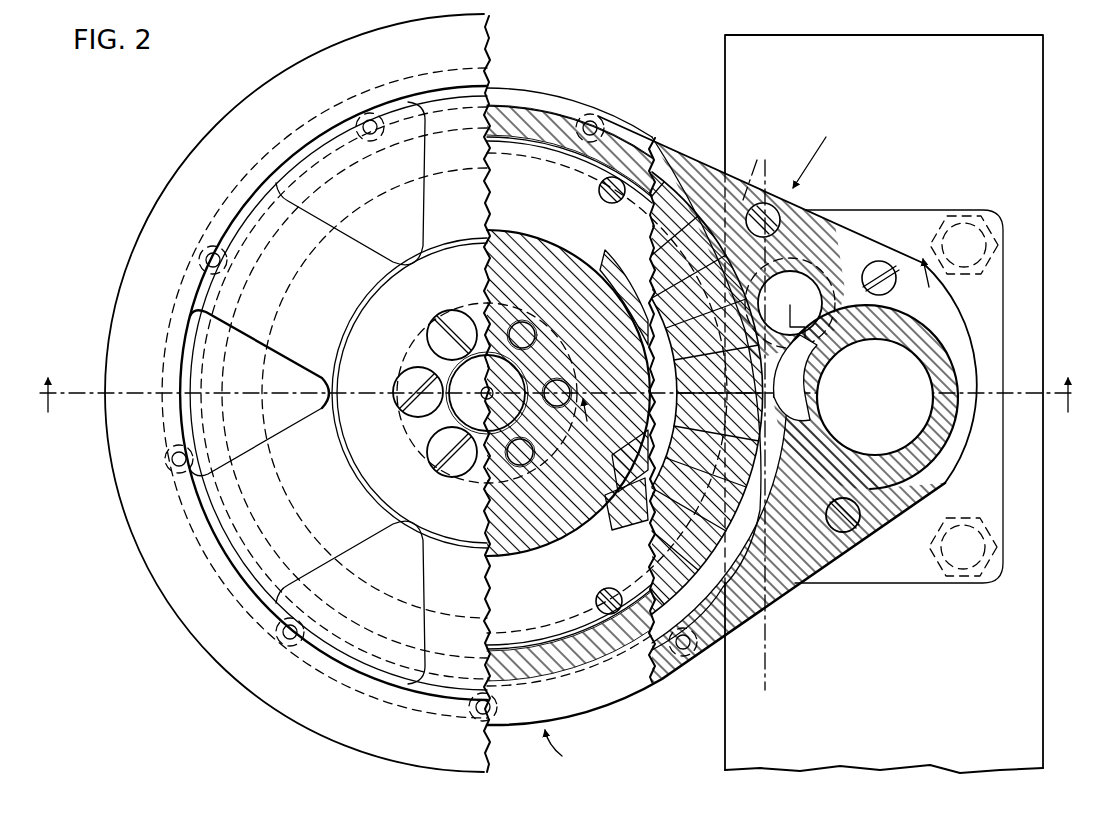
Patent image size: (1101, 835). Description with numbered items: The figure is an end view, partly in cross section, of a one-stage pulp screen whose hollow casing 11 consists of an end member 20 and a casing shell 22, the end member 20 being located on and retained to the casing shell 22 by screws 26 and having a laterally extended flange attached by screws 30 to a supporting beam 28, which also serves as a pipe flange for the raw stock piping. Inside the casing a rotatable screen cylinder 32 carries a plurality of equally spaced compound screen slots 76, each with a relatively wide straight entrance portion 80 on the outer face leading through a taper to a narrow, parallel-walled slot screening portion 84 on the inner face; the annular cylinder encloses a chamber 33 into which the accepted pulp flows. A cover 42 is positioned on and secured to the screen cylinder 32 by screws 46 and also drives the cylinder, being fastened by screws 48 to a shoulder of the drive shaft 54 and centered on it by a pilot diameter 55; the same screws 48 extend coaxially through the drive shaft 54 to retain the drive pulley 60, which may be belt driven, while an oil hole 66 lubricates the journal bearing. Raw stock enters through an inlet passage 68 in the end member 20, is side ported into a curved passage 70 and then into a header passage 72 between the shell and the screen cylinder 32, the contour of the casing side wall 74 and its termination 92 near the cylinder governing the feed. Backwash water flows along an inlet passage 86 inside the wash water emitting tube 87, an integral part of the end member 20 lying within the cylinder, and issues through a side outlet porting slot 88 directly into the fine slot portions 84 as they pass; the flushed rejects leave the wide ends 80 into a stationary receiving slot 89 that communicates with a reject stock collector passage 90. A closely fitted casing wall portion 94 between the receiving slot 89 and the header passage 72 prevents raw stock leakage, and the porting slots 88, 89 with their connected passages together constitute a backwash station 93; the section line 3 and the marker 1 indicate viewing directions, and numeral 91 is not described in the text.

The section line 1- 1 is at (558, 395).
The section line 3- 3 is at (751, 335).
The casing 11 is at (564, 754).
The end member 20 is at (897, 587).
The casing shell 22 is at (600, 700).
The screws 26 is at (170, 470).
The supporting beam 28 is at (725, 60).
The screws 30 is at (964, 212).
The screen cylinder 32 is at (690, 570).
The chamber 33 is at (700, 467).
The cover 42 is at (548, 589).
The screws 46 is at (606, 588).
The screws 48 is at (402, 386).
The drive shaft 54 is at (427, 337).
The pilot diameter 55 is at (508, 362).
The drive pulley 60 is at (165, 190).
The oil hole 66 is at (462, 408).
The inlet passage 68 is at (915, 380).
The curved passage 70 is at (818, 392).
The header passage 72 is at (783, 600).
The casing side wall 74 is at (795, 465).
The compound screen slots 76 is at (708, 551).
The entrance portion 80 is at (737, 504).
The slot screening portion 84 is at (665, 508).
The inlet passage 86 is at (695, 452).
The wash water emitting tube 87 is at (622, 443).
The side outlet porting slot 88 is at (648, 310).
The receiving slot 89 is at (770, 375).
The reject stock collector passage 90 is at (808, 292).
The axis 91 is at (754, 169).
The termination 92 is at (808, 246).
The backwash station 93 is at (817, 150).
The casing wall portion 94 is at (776, 425).